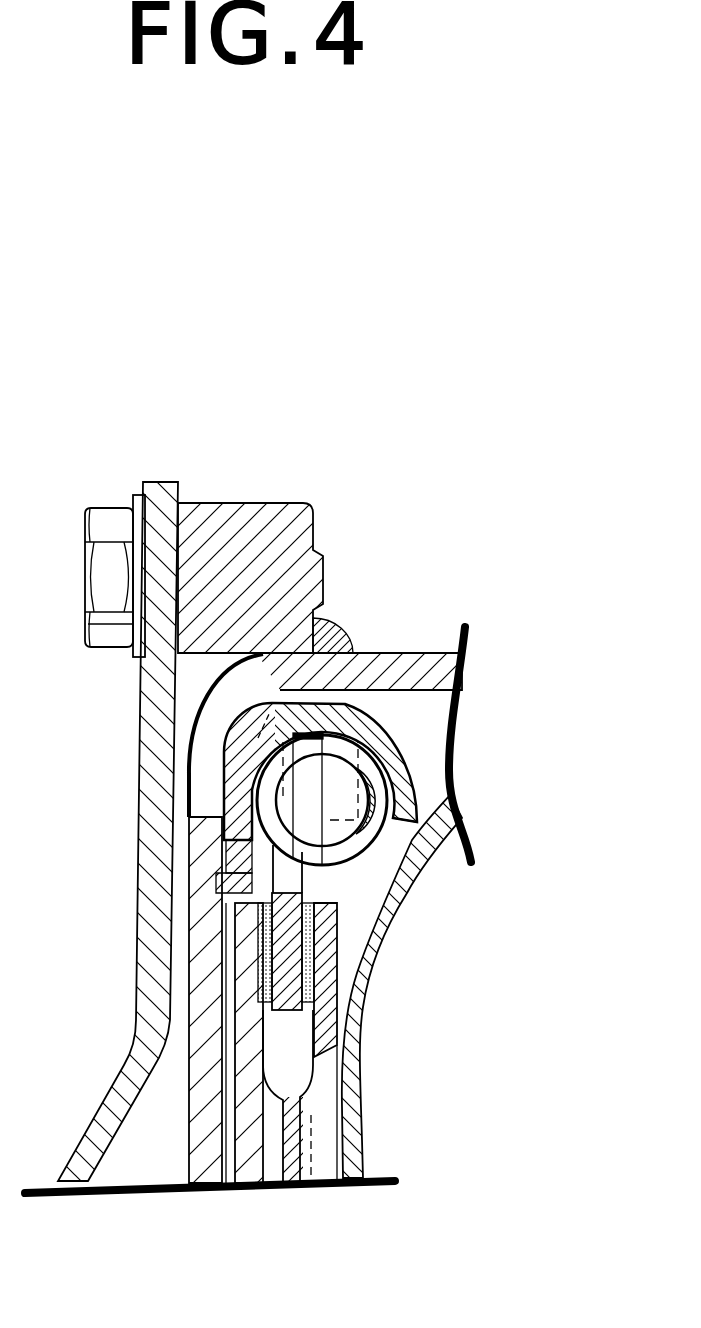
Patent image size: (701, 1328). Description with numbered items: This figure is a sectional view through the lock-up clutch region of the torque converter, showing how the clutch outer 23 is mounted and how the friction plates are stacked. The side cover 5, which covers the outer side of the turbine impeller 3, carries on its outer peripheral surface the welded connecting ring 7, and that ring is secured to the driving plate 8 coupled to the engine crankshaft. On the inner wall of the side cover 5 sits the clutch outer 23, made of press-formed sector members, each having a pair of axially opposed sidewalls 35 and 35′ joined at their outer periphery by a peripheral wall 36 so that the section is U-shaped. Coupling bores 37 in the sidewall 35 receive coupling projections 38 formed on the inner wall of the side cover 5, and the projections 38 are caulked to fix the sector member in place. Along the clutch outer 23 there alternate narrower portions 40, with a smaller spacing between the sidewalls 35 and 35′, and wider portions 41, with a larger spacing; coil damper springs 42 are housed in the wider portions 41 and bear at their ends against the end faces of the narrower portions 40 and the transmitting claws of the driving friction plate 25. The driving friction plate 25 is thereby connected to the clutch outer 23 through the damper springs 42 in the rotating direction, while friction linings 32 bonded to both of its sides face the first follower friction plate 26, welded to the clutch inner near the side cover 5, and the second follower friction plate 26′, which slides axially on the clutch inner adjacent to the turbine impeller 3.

The turbine impeller 3 is at (398, 897).
The side cover 5 is at (203, 1160).
The connecting ring 7 is at (261, 535).
The driving plate 8 is at (150, 876).
The clutch outer 23 is at (402, 710).
The driving friction plate 25 is at (284, 930).
The first follower friction plate 26 is at (250, 1163).
The second follower friction plate 26′ is at (470, 1057).
The friction linings 32 is at (260, 963).
The sidewall 35 is at (240, 772).
The sidewall 35′ is at (407, 786).
The peripheral wall 36 is at (298, 730).
The coupling bores 37 is at (232, 840).
The coupling projections 38 is at (238, 872).
The narrower portions 40 is at (377, 703).
The wider portions 41 is at (402, 757).
The damper springs 42 is at (382, 832).